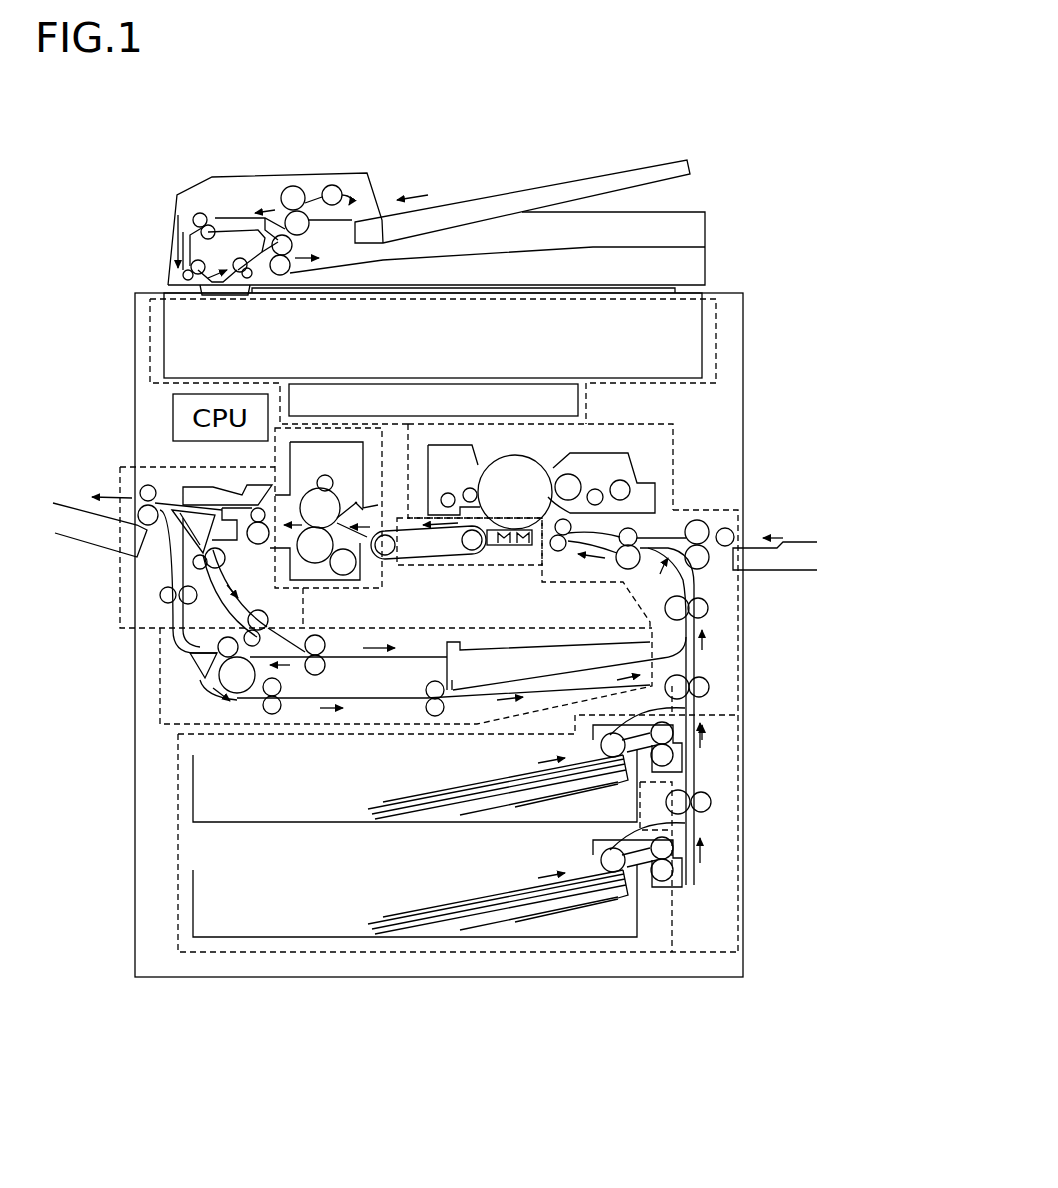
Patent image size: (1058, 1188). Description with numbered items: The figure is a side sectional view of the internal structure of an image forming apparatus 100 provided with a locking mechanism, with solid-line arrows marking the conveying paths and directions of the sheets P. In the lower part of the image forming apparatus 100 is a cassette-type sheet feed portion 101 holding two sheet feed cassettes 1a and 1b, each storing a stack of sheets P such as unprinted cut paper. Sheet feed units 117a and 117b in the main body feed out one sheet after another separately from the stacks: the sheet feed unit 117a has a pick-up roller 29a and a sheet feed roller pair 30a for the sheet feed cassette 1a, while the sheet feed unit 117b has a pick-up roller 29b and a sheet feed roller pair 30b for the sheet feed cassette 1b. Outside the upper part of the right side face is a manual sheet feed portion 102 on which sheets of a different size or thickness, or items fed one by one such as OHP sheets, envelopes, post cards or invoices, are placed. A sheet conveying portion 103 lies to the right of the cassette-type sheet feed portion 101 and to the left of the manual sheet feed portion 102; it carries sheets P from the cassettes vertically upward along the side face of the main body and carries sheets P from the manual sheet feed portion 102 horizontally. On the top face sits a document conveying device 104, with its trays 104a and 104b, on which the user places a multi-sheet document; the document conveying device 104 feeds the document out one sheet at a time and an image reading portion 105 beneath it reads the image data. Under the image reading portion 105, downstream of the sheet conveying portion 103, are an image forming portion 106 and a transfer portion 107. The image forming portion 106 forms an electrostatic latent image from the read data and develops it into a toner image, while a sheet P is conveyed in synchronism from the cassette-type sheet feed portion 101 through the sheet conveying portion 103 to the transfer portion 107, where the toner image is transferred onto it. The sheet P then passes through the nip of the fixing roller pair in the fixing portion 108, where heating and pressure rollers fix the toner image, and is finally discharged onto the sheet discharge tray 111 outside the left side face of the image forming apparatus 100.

The image forming apparatus 100 is at (731, 137).
The document conveying device 104 is at (220, 176).
The document tray 104a is at (557, 178).
The document discharge tray 104b is at (660, 248).
The image reading portion 105 is at (717, 353).
The image forming portion 106 is at (623, 423).
The transfer portion 107 is at (525, 565).
The fixing portion 108 is at (348, 592).
The sheet conveying portion 103 is at (707, 507).
The manual sheet feed portion 102 is at (812, 556).
The discharge tray 111 is at (60, 543).
The sheet feed unit 117a is at (860, 656).
The pick-up roller 29a is at (672, 722).
The sheet feed roller pair 30a is at (675, 756).
The sheet feed unit 117b is at (885, 777).
The pick-up roller 29b is at (672, 838).
The sheet feed roller pair 30b is at (675, 871).
The sheet feed cassette 1a is at (193, 786).
The sheet feed cassette 1b is at (193, 892).
The cassette-type sheet feed portion 101 is at (177, 920).
The sheet P is at (423, 927).